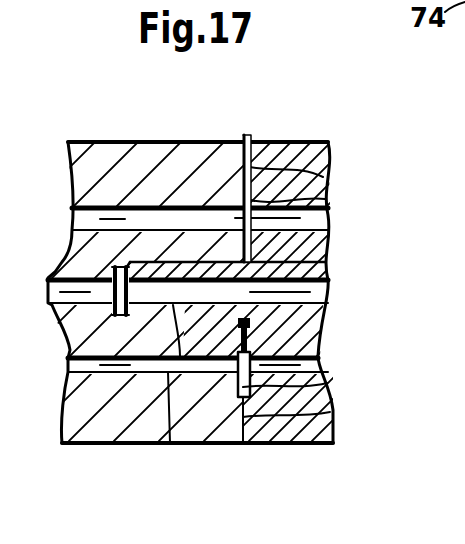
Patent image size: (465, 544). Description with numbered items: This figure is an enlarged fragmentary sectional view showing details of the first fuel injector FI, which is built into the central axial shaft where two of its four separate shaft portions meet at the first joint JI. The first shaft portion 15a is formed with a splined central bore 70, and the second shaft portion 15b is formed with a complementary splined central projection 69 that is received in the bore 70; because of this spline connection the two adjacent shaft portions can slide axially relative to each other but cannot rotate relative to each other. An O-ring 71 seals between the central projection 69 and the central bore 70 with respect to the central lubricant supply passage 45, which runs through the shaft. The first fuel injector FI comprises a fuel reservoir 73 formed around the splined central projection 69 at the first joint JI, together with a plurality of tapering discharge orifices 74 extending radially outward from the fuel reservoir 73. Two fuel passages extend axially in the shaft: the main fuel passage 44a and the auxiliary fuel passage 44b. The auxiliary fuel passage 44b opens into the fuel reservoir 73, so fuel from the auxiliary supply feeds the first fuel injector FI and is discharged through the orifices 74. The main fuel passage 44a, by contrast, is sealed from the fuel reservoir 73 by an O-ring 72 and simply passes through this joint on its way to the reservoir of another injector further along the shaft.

The first shaft portion 15a is at (99, 150).
The second shaft portion 15b is at (305, 142).
The splined central projection 69 is at (178, 262).
The first fuel injector FI is at (246, 135).
The tapering discharge orifices 74 is at (328, 156).
The fuel reservoir 73 is at (328, 189).
The auxiliary fuel passage 44b is at (328, 216).
The central lubricant supply passage 45 is at (327, 289).
The O-ring 71 is at (112, 264).
The main fuel passage 44a is at (325, 359).
The O-ring 72 is at (325, 386).
The first joint JI is at (330, 413).
The splined central bore 70 is at (168, 445).